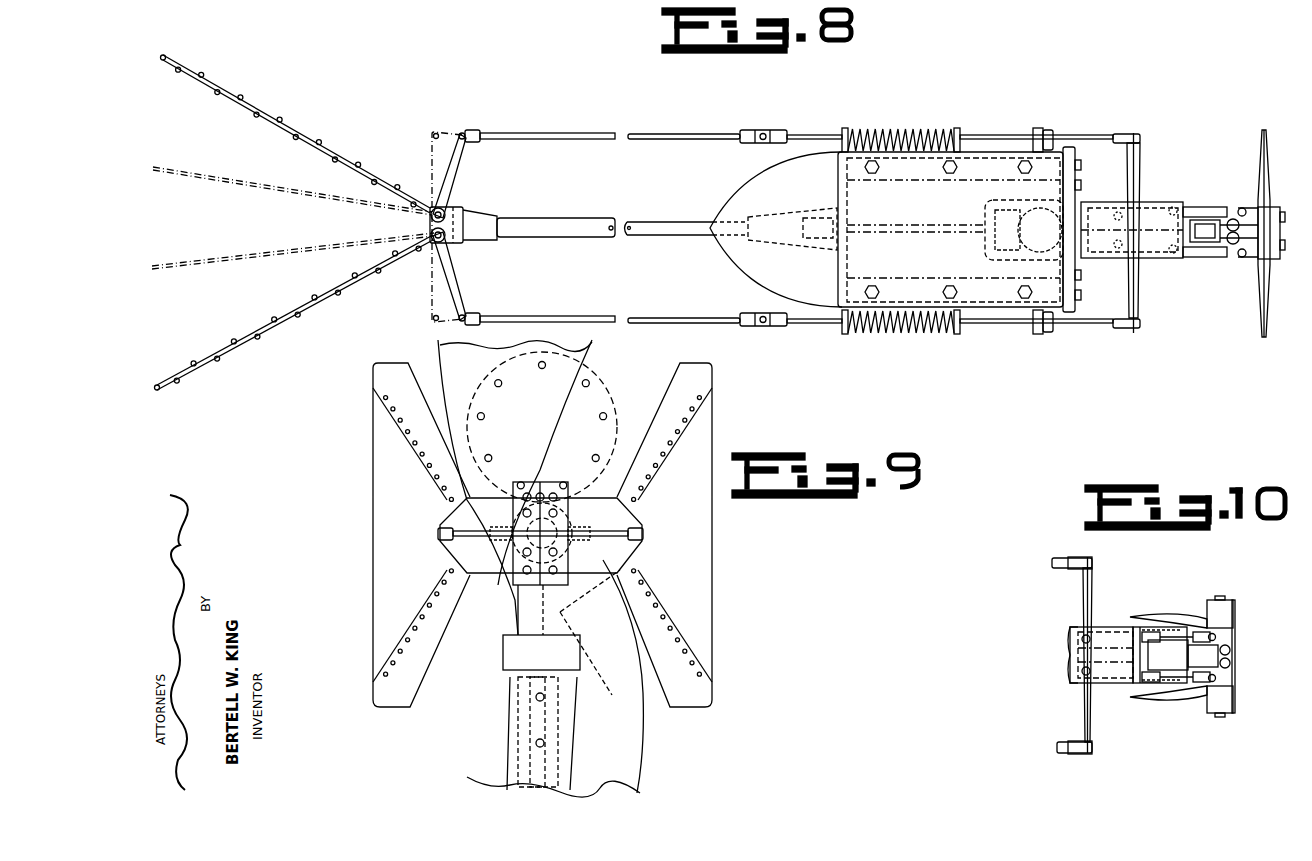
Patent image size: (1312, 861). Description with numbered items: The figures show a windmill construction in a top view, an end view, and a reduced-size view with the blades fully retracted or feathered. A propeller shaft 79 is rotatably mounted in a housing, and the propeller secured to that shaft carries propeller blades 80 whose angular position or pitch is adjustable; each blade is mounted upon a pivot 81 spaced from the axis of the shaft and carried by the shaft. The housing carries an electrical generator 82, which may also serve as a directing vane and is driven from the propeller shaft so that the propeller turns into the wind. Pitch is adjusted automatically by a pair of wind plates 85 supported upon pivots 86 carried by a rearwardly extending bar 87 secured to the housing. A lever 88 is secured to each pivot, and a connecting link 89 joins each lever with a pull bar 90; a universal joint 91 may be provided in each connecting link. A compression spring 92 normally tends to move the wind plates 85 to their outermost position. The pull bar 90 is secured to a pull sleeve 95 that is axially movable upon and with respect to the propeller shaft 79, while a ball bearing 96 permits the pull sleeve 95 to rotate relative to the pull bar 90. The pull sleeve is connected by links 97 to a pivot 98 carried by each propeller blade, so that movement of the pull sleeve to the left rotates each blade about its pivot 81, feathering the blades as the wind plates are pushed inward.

In FIG. 10, the propeller shaft 79 is at (1069, 655).
In FIG. 8, the propeller blades 80 is at (1268, 178).
In FIG. 10, the propeller blades 80 is at (1158, 615).
In FIG. 8, the pivot 81 is at (1233, 219).
In FIG. 10, the pivot 81 is at (1231, 657).
In FIG. 9, the electrical generator 82 is at (594, 392).
In FIG. 8, the wind plates 85 is at (250, 104).
In FIG. 9, the wind plates 85 is at (382, 506).
In FIG. 8, the pivots 86 is at (433, 208).
In FIG. 8, the rearwardly extending bar 87 is at (660, 226).
In FIG. 8, the lever 88 is at (453, 168).
In FIG. 8, the connecting link 89 is at (631, 141).
In FIG. 8, the pull bar 90 is at (1139, 163).
In FIG. 9, the pull bar 90 is at (610, 531).
In FIG. 10, the pull bar 90 is at (1091, 581).
In FIG. 8, the universal joint 91 is at (776, 131).
In FIG. 8, the compression spring 92 is at (906, 128).
In FIG. 10, the pull sleeve 95 is at (1102, 640).
In FIG. 10, the ball bearing 96 is at (1084, 673).
In FIG. 8, the links 97 is at (1200, 207).
In FIG. 10, the links 97 is at (1186, 635).
In FIG. 8, the pivot 98 is at (1243, 208).
In FIG. 10, the pivot 98 is at (1216, 637).